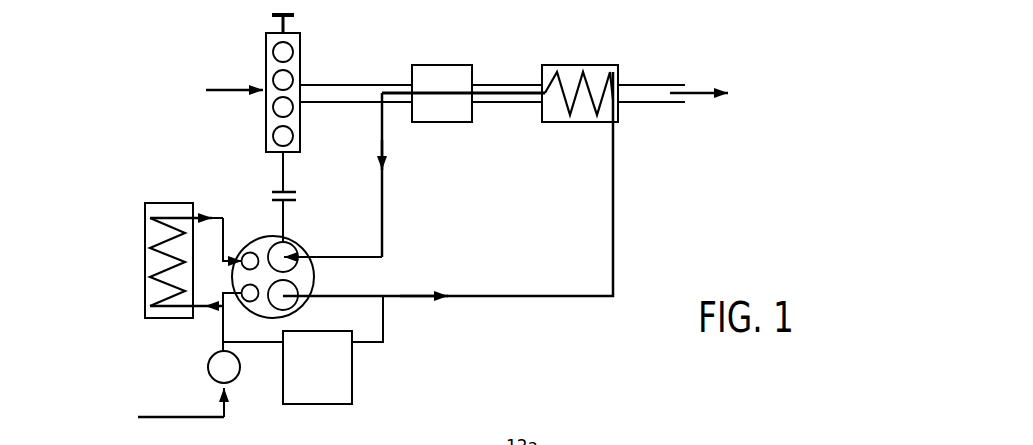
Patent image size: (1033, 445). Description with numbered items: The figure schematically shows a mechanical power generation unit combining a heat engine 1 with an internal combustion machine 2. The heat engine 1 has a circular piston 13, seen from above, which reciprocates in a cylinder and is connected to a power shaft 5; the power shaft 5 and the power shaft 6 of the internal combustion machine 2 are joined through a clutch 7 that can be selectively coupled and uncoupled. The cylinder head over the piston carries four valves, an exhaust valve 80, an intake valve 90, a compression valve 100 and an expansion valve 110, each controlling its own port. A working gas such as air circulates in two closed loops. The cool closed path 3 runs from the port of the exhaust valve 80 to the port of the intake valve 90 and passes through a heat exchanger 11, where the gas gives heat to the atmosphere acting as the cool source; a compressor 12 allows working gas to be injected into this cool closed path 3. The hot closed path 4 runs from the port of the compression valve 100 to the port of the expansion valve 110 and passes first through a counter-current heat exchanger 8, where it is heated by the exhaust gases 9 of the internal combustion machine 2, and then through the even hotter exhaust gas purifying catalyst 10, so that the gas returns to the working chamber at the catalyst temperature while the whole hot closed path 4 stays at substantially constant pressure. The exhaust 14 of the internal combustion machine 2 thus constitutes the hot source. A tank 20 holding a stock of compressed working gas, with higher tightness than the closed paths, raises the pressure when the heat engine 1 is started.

The heat engine 1 is at (250, 218).
The internal combustion machine 2 is at (250, 121).
The cool closed path 3 is at (126, 252).
The hot closed path 4 is at (630, 234).
The power shaft 5 is at (288, 218).
The power shaft 6 is at (288, 166).
The clutch 7 is at (291, 190).
The heat exchanger 8 is at (590, 63).
The exhaust gases 9 is at (693, 102).
The exhaust gas purifying catalyst 10 is at (450, 127).
The heat exchanger 11 is at (143, 268).
The compressor 12 is at (205, 372).
The circular piston 13 is at (281, 280).
The exhaust 14 is at (343, 85).
The tank 20 is at (355, 369).
The exhaust valve 80 is at (245, 300).
The intake valve 90 is at (243, 246).
The compression valve 100 is at (280, 308).
The expansion valve 110 is at (280, 240).